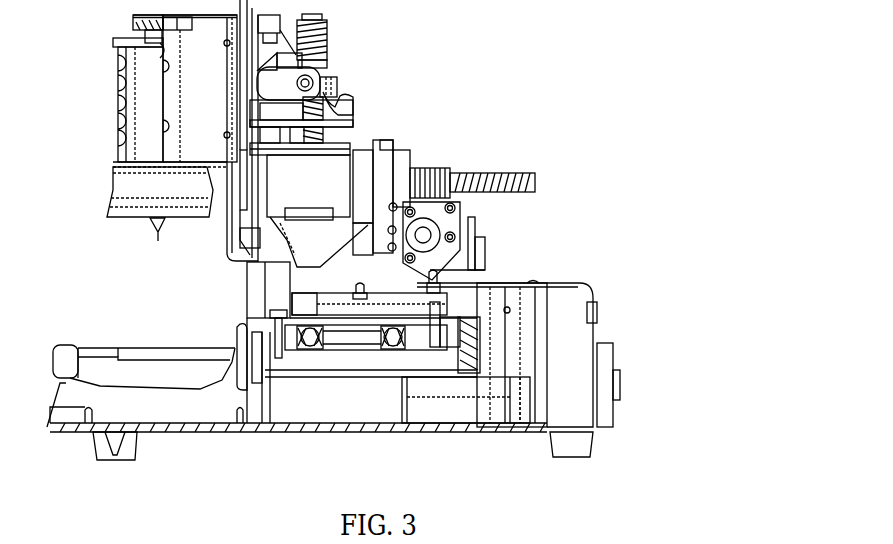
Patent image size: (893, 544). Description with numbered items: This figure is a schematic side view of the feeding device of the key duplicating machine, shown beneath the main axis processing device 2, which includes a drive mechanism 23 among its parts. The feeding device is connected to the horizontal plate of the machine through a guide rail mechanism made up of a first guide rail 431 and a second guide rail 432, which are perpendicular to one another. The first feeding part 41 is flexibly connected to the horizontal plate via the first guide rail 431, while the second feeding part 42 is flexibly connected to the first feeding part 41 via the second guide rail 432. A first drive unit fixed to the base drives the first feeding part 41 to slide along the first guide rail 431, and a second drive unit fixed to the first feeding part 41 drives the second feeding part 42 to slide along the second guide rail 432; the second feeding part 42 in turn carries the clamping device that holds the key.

The main axis processing device 2 is at (217, 99).
The drive mechanism 23 is at (330, 30).
The first feeding part 41 is at (337, 308).
The second feeding part 42 is at (183, 360).
The first guide rail 431 is at (415, 326).
The second guide rail 432 is at (280, 330).